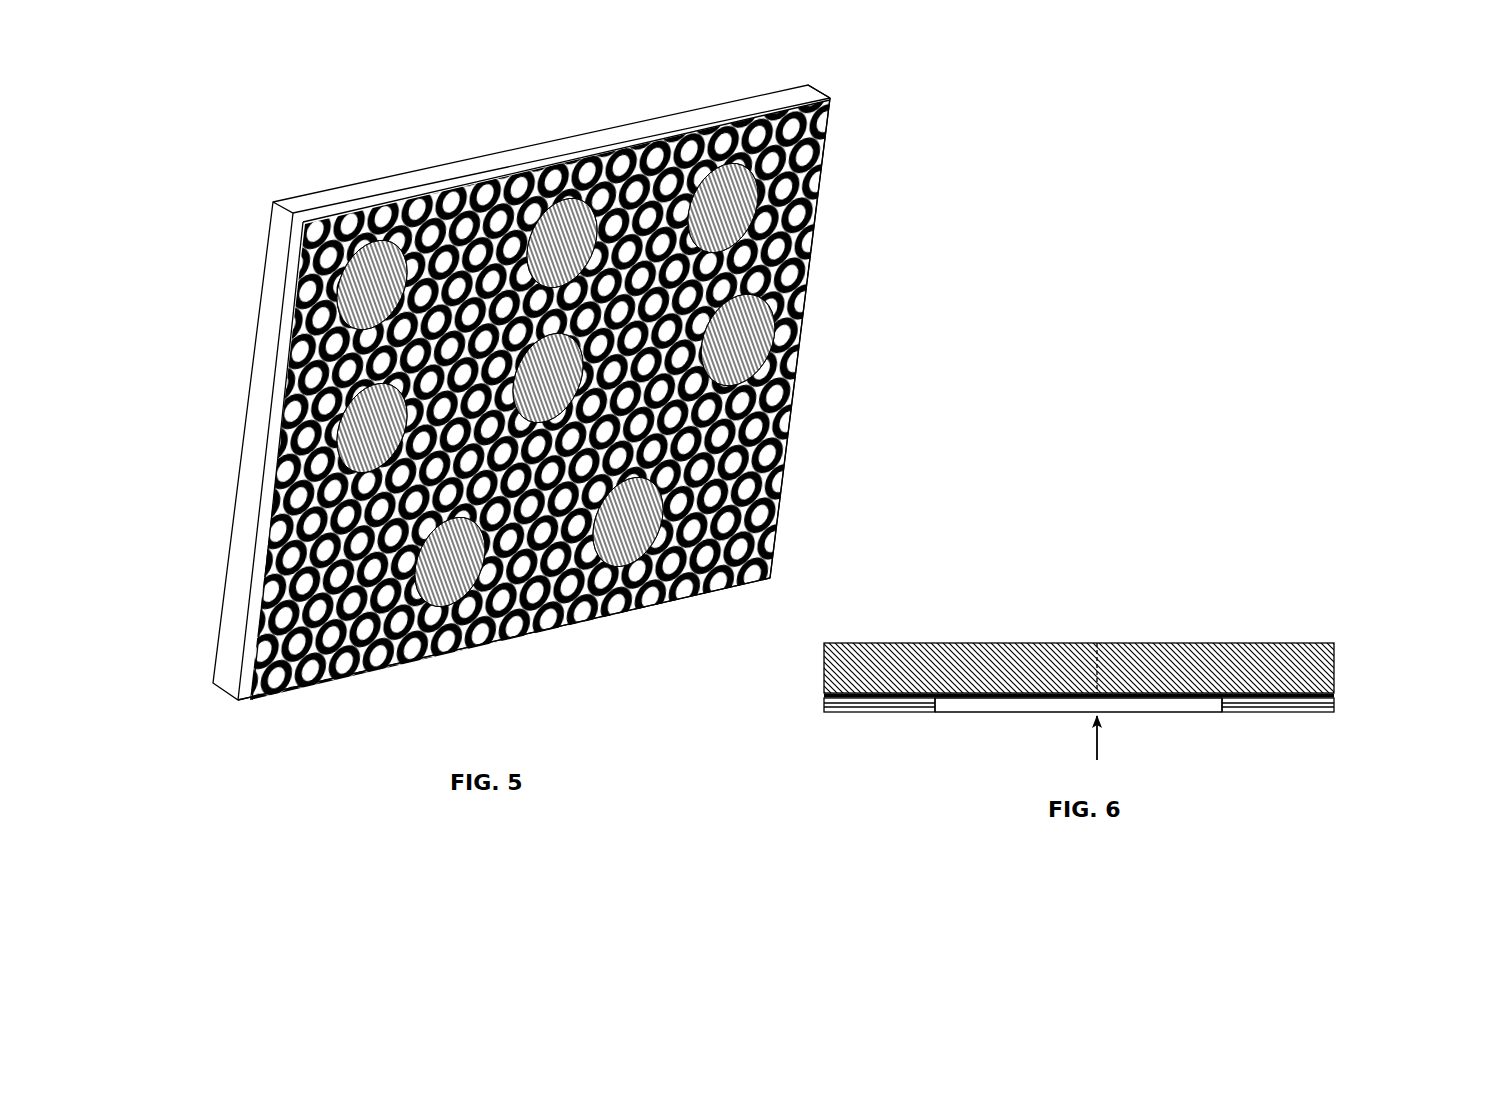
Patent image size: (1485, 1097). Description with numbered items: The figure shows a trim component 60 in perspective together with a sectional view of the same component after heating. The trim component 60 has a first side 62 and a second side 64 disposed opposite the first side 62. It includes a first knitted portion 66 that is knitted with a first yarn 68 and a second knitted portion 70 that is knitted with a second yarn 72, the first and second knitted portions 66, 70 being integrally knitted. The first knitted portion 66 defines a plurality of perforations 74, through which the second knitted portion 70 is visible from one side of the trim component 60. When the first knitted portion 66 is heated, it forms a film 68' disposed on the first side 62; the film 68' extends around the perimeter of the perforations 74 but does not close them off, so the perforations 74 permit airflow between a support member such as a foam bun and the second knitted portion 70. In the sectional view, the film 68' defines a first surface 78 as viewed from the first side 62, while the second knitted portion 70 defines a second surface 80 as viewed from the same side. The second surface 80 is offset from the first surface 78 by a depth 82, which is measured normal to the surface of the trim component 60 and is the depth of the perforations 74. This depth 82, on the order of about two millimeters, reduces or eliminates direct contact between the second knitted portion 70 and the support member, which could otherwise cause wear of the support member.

In FIG. 5, the trim component 60 is at (518, 394).
In FIG. 6, the trim component 60 is at (1133, 664).
In FIG. 5, the first side 62 is at (580, 615).
In FIG. 6, the first side 62 is at (912, 713).
In FIG. 5, the second side 64 is at (484, 155).
In FIG. 6, the second side 64 is at (1126, 629).
In FIG. 5, the first knitted portion 66 is at (790, 452).
In FIG. 5, the first yarn 68 is at (849, 102).
In FIG. 6, the film 68' is at (1137, 681).
In FIG. 5, the second knitted portion 70 is at (748, 318).
In FIG. 6, the second knitted portion 70 is at (1315, 675).
In FIG. 5, the second yarn 72 is at (353, 281).
In FIG. 5, the perforations 74 is at (562, 238).
In FIG. 6, the perforations 74 is at (1172, 703).
In FIG. 6, the first surface 78 is at (1282, 713).
In FIG. 6, the second surface 80 is at (1020, 698).
In FIG. 6, the depth 82 is at (1097, 738).